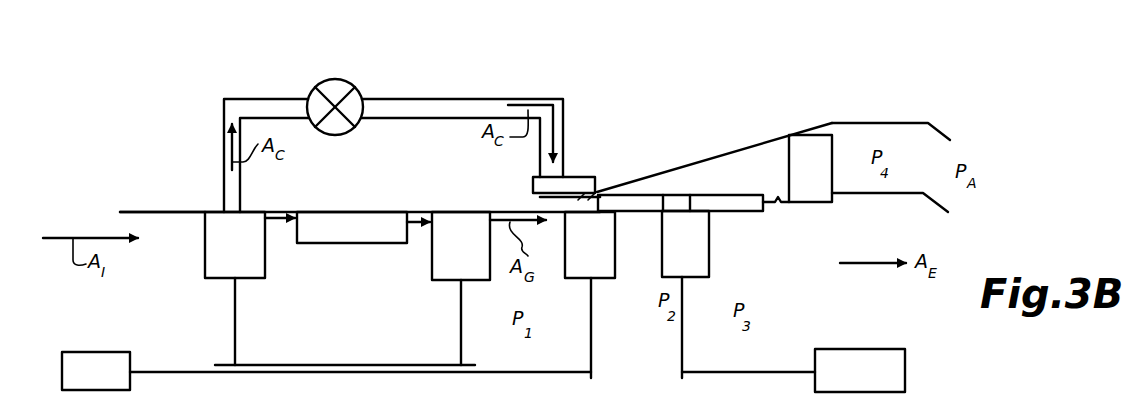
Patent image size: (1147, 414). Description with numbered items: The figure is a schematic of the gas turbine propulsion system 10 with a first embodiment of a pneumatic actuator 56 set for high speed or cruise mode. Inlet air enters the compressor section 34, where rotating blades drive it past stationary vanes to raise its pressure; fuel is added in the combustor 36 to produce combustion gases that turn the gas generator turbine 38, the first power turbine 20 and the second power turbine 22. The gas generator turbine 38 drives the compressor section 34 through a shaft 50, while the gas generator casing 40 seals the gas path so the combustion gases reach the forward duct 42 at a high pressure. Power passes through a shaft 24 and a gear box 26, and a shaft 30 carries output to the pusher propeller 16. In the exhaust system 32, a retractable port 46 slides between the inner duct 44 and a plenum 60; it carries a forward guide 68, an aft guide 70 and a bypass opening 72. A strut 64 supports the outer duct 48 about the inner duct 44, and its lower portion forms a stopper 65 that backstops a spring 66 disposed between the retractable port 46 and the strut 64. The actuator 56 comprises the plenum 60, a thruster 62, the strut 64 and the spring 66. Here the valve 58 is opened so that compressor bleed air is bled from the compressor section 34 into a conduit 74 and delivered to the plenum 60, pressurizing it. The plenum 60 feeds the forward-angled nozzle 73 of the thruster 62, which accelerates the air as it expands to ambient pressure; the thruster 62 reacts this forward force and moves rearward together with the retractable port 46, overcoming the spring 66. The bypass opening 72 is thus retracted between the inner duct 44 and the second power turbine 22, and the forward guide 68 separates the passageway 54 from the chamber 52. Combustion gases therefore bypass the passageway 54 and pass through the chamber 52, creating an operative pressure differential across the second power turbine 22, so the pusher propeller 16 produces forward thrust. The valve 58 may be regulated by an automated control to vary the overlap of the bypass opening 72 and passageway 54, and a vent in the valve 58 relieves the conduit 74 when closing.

The gas turbine propulsion system 10 is at (640, 102).
The pusher propeller 16 is at (860, 370).
The first power turbine 20 is at (590, 295).
The second power turbine 22 is at (685, 294).
The shaft 24 is at (184, 372).
The gear box 26 is at (96, 371).
The shaft 30 is at (777, 373).
The exhaust system 32 is at (904, 112).
The compressor section 34 is at (235, 288).
The combustor 36 is at (352, 227).
The gas generator turbine 38 is at (461, 288).
The gas generator casing 40 is at (146, 212).
The forward duct 42 is at (162, 176).
The inner duct 44 is at (848, 193).
The retractable port 46 is at (745, 206).
The outer duct 48 is at (808, 132).
The shaft 50 is at (270, 365).
The chamber 52 is at (630, 223).
The passageway 54 is at (714, 157).
The pneumatic actuator 56 is at (599, 160).
The valve 58 is at (353, 85).
The plenum 60 is at (572, 174).
The thruster 62 is at (548, 197).
The strut 64 is at (810, 168).
The stopper 65 is at (822, 200).
The spring 66 is at (778, 207).
The forward guide 68 is at (628, 202).
The aft guide 70 is at (745, 207).
The bypass opening 72 is at (682, 197).
The nozzle 73 is at (540, 182).
The conduit 74 is at (254, 99).